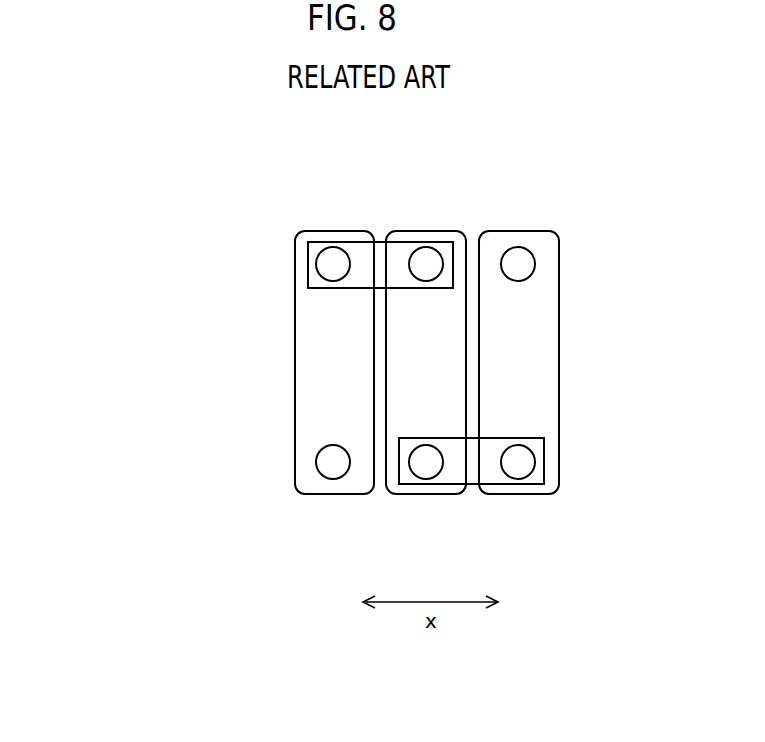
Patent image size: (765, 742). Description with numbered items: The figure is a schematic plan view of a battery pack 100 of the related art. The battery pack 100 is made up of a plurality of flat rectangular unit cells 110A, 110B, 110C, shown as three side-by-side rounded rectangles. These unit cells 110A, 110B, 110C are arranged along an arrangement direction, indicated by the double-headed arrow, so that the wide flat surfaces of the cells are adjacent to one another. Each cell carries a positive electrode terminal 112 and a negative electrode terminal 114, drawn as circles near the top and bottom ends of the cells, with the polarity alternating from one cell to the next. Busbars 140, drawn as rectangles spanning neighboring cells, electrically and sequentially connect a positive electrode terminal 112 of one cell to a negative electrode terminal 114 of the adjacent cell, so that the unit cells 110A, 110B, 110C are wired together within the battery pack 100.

The battery pack 100 is at (154, 162).
The unit cell 110A is at (340, 229).
The unit cell 110B is at (433, 229).
The unit cell 110C is at (526, 229).
The positive electrode terminal 112 is at (416, 248).
The negative electrode terminal 114 is at (323, 248).
The busbar 140 is at (308, 275).